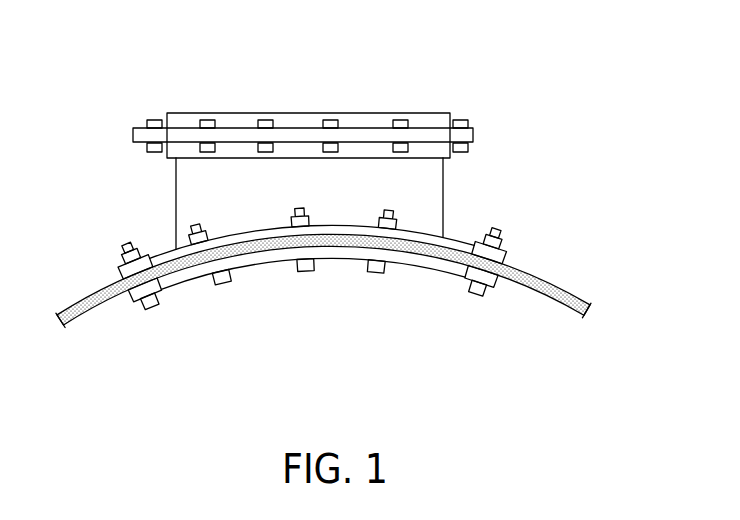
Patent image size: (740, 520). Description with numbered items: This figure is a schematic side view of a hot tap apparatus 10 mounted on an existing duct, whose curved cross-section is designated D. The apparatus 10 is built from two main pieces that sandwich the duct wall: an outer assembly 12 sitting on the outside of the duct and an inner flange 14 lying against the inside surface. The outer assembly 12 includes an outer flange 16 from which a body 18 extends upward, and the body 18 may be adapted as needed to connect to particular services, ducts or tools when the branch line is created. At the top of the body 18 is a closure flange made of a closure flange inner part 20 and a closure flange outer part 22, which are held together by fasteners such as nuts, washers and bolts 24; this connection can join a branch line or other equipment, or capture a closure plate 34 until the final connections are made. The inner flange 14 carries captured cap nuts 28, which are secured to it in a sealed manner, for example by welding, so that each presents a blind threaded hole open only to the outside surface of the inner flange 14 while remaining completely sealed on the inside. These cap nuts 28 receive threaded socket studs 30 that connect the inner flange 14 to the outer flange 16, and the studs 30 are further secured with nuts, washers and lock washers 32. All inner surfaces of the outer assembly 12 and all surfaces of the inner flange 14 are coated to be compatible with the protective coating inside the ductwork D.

The hot tap apparatus 10 is at (297, 128).
The outer assembly 12 is at (304, 200).
The inner flange 14 is at (508, 290).
The outer flange 16 is at (517, 268).
The body 18 is at (428, 197).
The closure flange inner part 20 is at (167, 158).
The closure flange outer part 22 is at (167, 113).
The bolts 24 is at (147, 150).
The captured cap nuts 28 is at (152, 311).
The threaded socket studs 30 is at (123, 253).
The nuts, washers and lock washers 32 is at (118, 268).
The closure plate 34 is at (268, 88).
The ductwork D is at (591, 306).